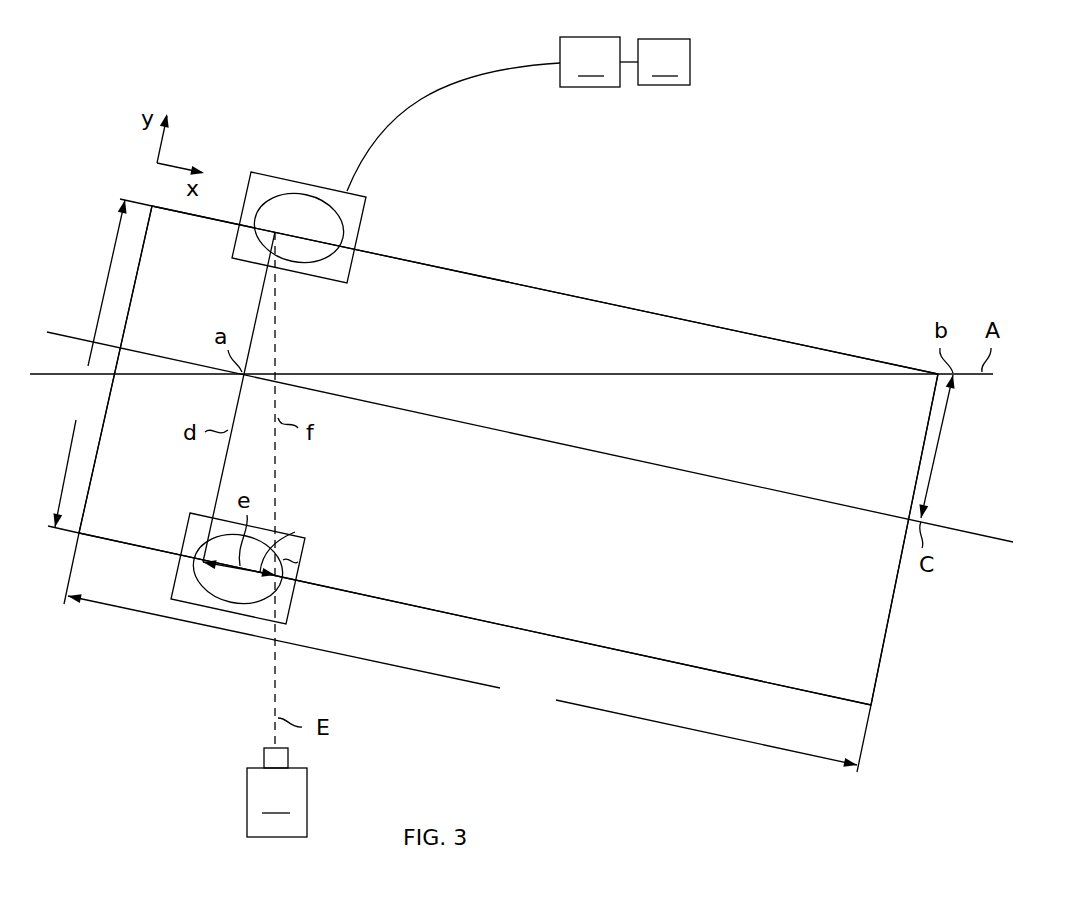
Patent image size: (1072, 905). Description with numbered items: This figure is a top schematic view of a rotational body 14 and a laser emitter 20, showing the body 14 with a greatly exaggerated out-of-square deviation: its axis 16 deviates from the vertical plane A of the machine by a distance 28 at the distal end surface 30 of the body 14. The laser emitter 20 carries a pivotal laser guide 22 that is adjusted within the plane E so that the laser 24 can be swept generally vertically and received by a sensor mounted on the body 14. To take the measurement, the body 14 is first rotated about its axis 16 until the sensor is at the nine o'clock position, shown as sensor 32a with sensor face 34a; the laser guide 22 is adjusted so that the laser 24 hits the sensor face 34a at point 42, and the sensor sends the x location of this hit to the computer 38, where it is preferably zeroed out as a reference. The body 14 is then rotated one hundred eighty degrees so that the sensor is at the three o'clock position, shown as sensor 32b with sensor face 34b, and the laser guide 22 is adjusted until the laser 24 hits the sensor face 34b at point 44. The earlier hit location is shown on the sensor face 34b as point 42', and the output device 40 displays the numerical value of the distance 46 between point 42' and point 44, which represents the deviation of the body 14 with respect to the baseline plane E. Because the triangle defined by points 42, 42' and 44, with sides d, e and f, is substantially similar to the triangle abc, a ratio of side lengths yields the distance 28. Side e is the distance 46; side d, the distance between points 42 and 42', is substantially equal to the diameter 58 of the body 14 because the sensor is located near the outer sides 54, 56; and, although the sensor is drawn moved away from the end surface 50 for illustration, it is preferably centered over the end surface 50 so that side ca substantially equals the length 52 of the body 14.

The rotational body 14 is at (583, 307).
The axis 16 is at (985, 530).
The laser emitter 20 is at (277, 802).
The laser guide 22 is at (262, 760).
The laser 24 is at (272, 683).
The distance 28 is at (938, 458).
The distal end surface 30 is at (885, 650).
The sensor 32a is at (270, 180).
The sensor face 34a is at (316, 196).
The computer 38 is at (483, 114).
The output device 40 is at (655, 62).
The point 42 is at (303, 389).
The end surface 50 is at (142, 247).
The length 52 is at (467, 652).
The outer side 54 is at (716, 325).
The outer side 56 is at (798, 690).
The diameter 58 is at (100, 366).
The sensor 32b is at (185, 605).
The sensor face 34b is at (237, 602).
The point 42' is at (197, 571).
The point 44 is at (298, 562).
The distance 46 is at (287, 537).